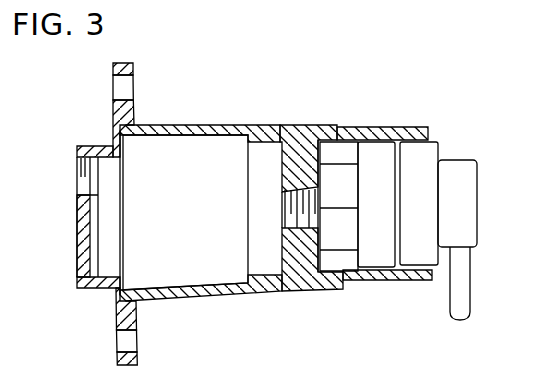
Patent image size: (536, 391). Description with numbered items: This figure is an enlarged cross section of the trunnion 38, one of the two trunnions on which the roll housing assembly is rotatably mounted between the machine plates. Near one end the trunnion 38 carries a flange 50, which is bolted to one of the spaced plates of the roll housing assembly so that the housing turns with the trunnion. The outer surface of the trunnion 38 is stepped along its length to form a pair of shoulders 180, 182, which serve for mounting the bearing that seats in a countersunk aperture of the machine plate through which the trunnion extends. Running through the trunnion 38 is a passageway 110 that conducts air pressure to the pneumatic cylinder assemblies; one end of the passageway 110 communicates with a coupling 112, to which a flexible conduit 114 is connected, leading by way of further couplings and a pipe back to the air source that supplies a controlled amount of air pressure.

The flange 50 is at (115, 110).
The trunnion 38 is at (196, 126).
The passageway 110 is at (198, 260).
The shoulder 180 is at (278, 125).
The shoulder 182 is at (342, 127).
The coupling 112 is at (457, 161).
The flexible conduit 114 is at (450, 308).